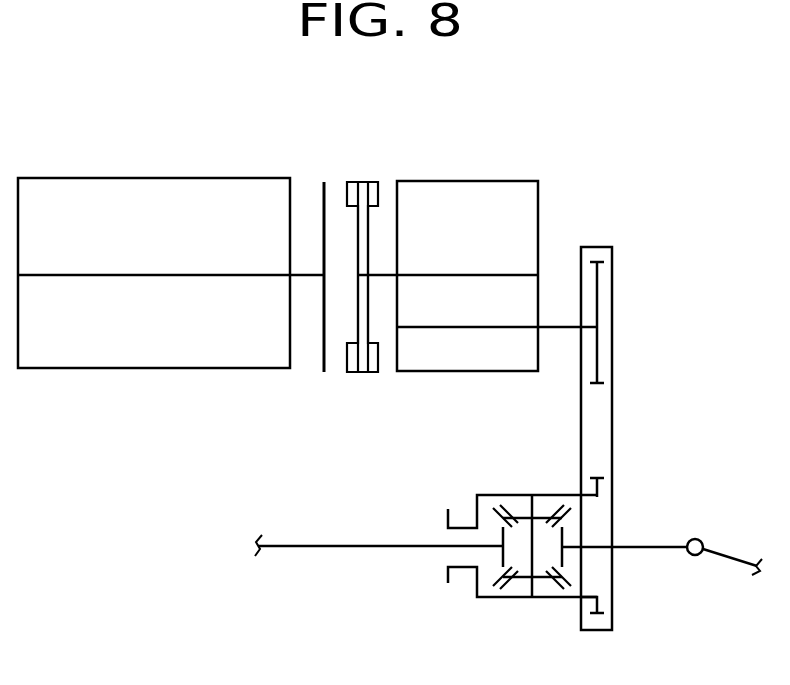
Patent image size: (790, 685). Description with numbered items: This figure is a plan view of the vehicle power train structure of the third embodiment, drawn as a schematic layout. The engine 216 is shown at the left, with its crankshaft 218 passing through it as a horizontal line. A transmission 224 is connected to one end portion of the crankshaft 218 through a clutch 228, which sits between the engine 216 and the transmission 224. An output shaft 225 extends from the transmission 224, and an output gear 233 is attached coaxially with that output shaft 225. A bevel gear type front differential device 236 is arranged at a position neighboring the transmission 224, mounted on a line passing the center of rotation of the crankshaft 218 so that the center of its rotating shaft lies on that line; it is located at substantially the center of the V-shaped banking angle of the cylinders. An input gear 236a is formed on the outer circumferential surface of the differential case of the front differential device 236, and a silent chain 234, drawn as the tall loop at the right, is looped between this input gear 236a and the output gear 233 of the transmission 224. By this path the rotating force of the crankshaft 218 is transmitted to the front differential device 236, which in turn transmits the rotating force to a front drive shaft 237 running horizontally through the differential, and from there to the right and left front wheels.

The engine 216 is at (107, 338).
The crankshaft 218 is at (143, 273).
The transmission 224 is at (468, 180).
The output shaft 225 is at (450, 327).
The clutch 228 is at (333, 180).
The output gear 233 is at (599, 303).
The silent chain 234 is at (613, 408).
The front differential device 236 is at (463, 493).
The input gear 236a is at (593, 478).
The front drive shaft 237 is at (335, 545).